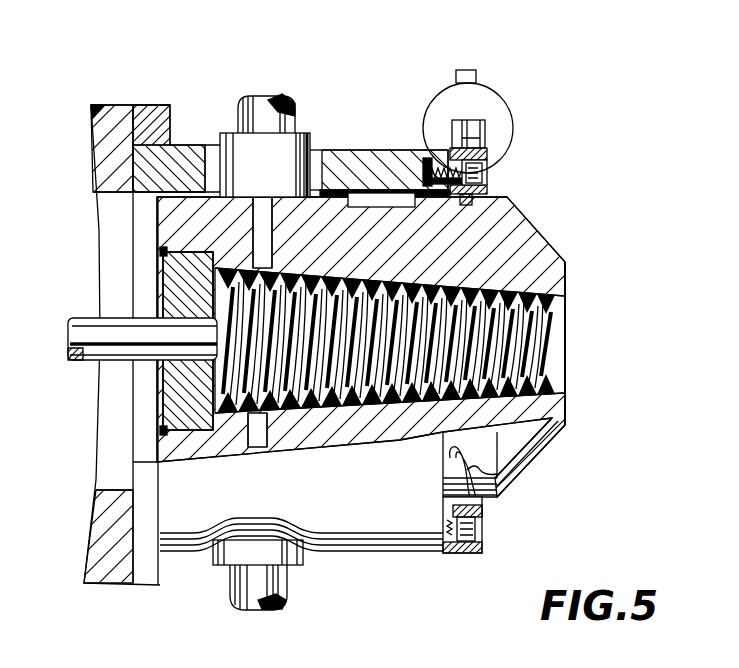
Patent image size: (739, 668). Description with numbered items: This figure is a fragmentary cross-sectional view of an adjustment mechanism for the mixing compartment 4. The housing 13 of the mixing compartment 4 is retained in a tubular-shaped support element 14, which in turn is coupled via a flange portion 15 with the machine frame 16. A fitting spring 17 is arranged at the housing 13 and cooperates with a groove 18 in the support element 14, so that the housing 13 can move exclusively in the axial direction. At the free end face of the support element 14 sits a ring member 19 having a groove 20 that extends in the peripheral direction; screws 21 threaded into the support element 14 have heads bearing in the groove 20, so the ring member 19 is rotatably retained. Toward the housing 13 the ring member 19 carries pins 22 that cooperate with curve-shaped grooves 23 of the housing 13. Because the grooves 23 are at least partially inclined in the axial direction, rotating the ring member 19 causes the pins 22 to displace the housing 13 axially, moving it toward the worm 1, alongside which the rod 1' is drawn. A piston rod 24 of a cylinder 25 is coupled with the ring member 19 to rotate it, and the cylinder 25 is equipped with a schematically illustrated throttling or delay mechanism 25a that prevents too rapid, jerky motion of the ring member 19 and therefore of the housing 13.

The worm 1 is at (419, 340).
The rod 1' is at (131, 341).
The mixing compartment 4 is at (540, 272).
The housing 13 is at (565, 282).
The tubular-shaped support element 14 is at (340, 160).
The flange portion 15 is at (162, 117).
The machine frame 16 is at (100, 150).
The fitting spring 17 is at (372, 200).
The groove 18 is at (425, 178).
The ring member 19 is at (492, 165).
The groove 20 is at (488, 178).
The screws 21 is at (460, 556).
The pins 22 is at (475, 502).
The curve-shaped grooves 23 is at (513, 480).
The piston rod 24 is at (475, 128).
The cylinder 25 is at (480, 92).
The throttling or delay mechanism 25a is at (463, 72).